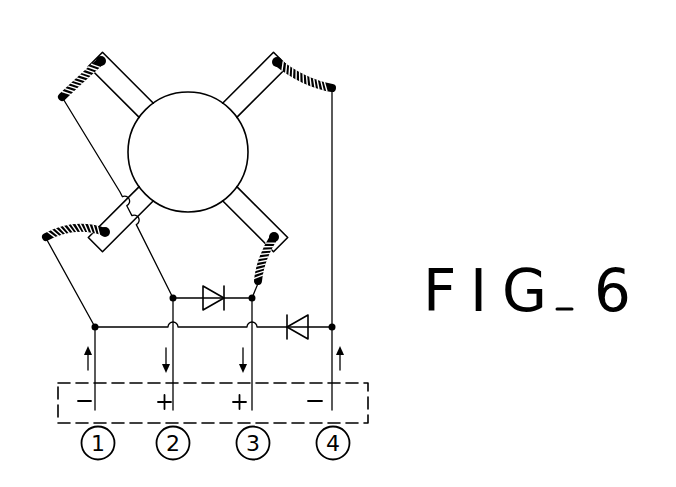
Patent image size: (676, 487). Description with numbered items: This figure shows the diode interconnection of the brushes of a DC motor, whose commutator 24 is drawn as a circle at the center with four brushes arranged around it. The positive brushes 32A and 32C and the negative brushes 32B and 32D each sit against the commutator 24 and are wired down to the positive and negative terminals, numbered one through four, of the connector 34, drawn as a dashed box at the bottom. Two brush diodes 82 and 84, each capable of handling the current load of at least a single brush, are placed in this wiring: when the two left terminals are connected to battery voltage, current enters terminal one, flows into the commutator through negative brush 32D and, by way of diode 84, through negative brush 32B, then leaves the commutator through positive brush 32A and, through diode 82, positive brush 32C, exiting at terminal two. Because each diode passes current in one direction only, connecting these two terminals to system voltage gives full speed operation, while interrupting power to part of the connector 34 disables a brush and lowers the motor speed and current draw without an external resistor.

The motor armature 24 is at (182, 90).
The positive brush 32A is at (102, 54).
The negative brush 32B is at (280, 57).
The positive brush 32C is at (287, 233).
The negative brush 32D is at (105, 232).
The brush diode 82 is at (217, 287).
The brush diode 84 is at (293, 316).
The connector 34 is at (368, 402).